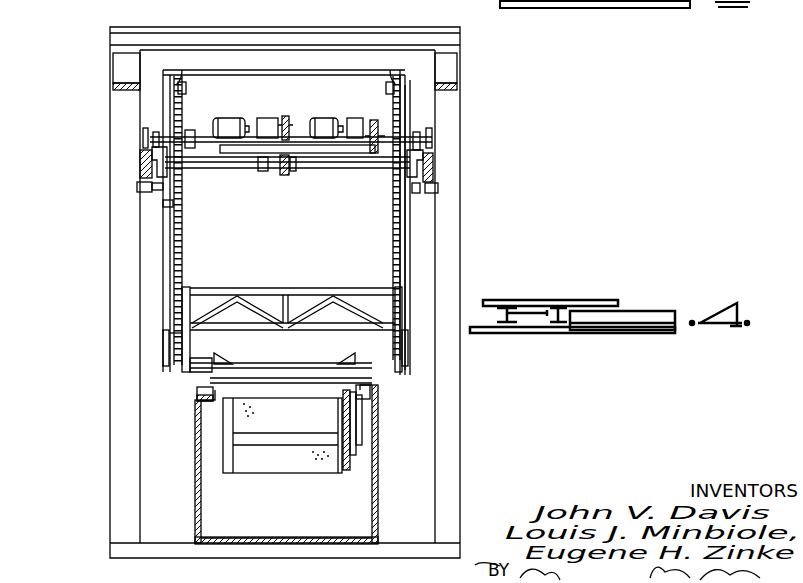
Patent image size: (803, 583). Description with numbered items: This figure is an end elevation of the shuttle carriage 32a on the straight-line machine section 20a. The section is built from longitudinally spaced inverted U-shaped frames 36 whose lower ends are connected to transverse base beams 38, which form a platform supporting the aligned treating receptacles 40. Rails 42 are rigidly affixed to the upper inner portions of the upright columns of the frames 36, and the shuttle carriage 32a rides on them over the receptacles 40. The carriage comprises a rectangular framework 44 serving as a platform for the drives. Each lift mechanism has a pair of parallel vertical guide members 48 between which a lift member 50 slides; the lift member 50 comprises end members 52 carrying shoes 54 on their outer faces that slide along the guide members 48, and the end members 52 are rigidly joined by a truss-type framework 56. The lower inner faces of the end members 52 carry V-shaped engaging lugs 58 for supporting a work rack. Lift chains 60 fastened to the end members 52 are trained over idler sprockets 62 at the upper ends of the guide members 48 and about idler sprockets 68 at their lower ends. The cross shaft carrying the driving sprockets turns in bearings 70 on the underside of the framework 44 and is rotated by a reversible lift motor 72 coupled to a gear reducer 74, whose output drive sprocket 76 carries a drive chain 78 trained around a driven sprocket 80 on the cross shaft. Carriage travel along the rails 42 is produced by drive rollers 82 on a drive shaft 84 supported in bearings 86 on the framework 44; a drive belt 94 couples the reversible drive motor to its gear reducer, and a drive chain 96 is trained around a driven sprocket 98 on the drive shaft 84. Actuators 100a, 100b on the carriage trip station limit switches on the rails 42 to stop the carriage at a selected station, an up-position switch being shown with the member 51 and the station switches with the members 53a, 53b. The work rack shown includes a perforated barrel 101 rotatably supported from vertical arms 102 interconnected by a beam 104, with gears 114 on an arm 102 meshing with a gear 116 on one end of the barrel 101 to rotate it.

The straight-line machine section 20a is at (185, 447).
The shuttle carriage 32a is at (420, 230).
The inverted U-shaped frames 36 is at (125, 300).
The transverse base beams 38 is at (150, 548).
The treating receptacles 40 is at (372, 492).
The rails 42 is at (140, 168).
The rectangular framework 44 is at (207, 179).
The vertical guide members 48 is at (178, 253).
The lift member 50 is at (255, 290).
The stop member 51 is at (167, 203).
The end members 52 is at (175, 333).
The stop block 53a is at (438, 187).
The stop block 53b is at (137, 187).
The shoes 54 is at (178, 310).
The truss-type framework 56 is at (270, 305).
The engaging lug 58 is at (205, 380).
The lift chains 60 is at (176, 237).
The idler sprocket 62 is at (180, 86).
The idler sprocket 68 is at (175, 360).
The bearings 70 is at (165, 155).
The reversible lift motor 72 is at (237, 118).
The gear reducer 74 is at (268, 118).
The drive sprocket 76 is at (300, 104).
The drive chain 78 is at (300, 172).
The driven sprocket 80 is at (290, 172).
The drive rollers 82 is at (158, 140).
The drive shaft 84 is at (190, 134).
The bearings 86 is at (150, 128).
The drive belt 94 is at (332, 118).
The drive chain 96 is at (375, 120).
The driven sprocket 98 is at (378, 153).
The actuator 100a is at (420, 195).
The actuator 100b is at (165, 195).
The perforated barrel 101 is at (268, 477).
The vertical arms 102 is at (200, 402).
The beam 104 is at (265, 365).
The gears 114 is at (362, 400).
The gear 116 is at (350, 462).